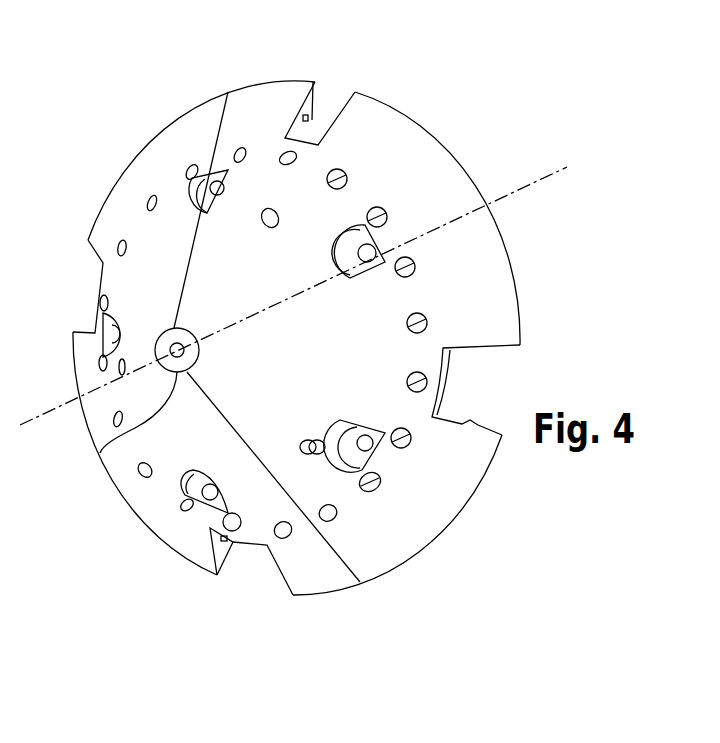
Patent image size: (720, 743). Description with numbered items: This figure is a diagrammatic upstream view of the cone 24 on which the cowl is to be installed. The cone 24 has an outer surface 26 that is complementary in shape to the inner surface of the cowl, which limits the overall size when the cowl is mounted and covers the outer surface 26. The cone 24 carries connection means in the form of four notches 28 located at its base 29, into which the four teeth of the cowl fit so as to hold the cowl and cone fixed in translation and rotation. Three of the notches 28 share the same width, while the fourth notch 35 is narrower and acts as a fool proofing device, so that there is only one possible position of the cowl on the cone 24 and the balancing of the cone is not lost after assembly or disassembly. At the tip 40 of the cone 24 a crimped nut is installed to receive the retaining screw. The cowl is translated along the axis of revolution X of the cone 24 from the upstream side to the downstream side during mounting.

The cone 24 is at (495, 499).
The outer surface 26 is at (468, 295).
The notches 28 is at (252, 596).
The base 29 is at (423, 552).
The fourth notch 35 is at (338, 78).
The tip 40 is at (100, 453).
The axis of revolution X is at (306, 291).